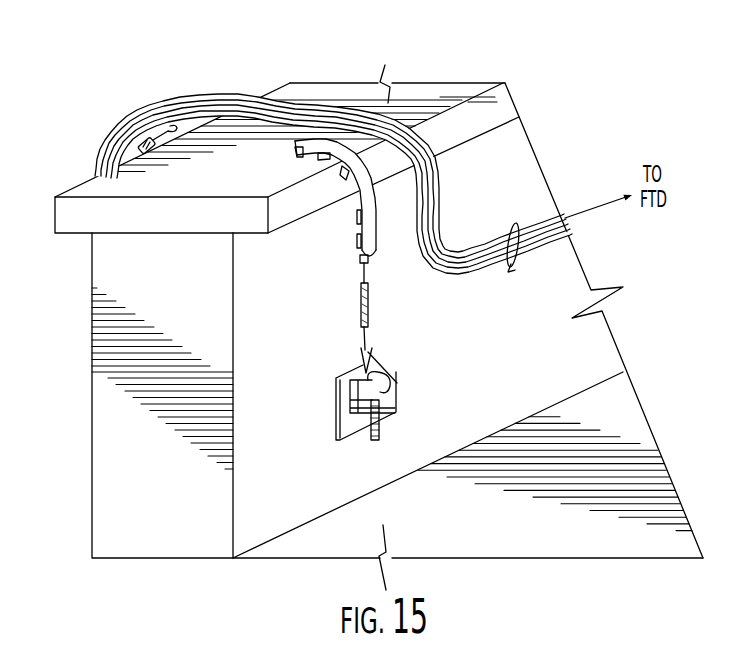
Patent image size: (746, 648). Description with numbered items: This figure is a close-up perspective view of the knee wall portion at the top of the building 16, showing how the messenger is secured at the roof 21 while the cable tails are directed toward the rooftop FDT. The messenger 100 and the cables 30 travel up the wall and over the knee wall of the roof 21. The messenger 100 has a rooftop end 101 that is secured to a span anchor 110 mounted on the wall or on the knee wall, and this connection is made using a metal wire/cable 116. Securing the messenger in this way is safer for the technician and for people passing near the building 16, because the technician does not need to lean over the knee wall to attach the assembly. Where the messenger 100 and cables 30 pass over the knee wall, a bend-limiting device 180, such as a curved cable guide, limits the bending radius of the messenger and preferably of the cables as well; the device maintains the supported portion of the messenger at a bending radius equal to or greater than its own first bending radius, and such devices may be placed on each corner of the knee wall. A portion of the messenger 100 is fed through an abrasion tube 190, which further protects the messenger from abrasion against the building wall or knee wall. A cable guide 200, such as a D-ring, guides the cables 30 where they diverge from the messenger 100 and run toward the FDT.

The building 16 is at (56, 353).
The roof 21 is at (520, 156).
The cables 30 is at (197, 100).
The messenger 100 is at (370, 270).
The rooftop end 101 is at (342, 400).
The span anchor 110 is at (412, 385).
The metal wire/cable 116 is at (362, 357).
The bend-limiting device 180 is at (112, 143).
The abrasion tube 190 is at (258, 130).
The cable guides 200 is at (512, 260).